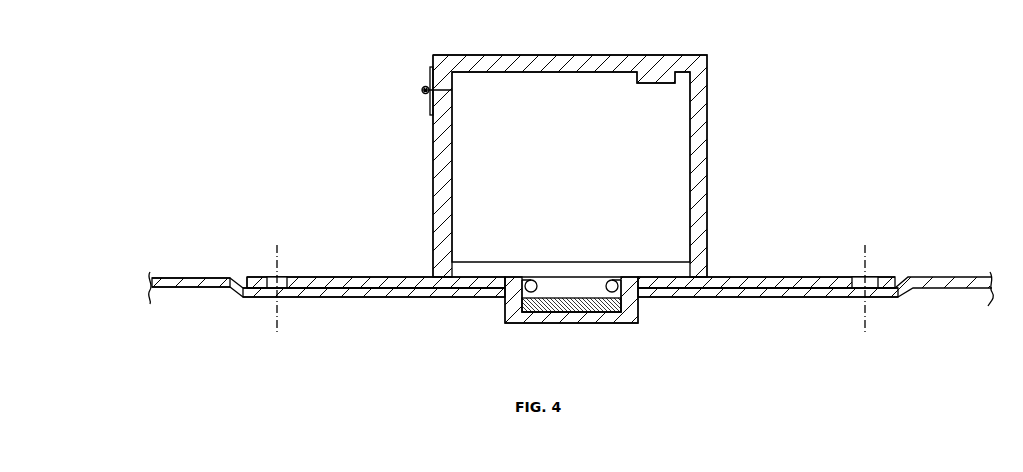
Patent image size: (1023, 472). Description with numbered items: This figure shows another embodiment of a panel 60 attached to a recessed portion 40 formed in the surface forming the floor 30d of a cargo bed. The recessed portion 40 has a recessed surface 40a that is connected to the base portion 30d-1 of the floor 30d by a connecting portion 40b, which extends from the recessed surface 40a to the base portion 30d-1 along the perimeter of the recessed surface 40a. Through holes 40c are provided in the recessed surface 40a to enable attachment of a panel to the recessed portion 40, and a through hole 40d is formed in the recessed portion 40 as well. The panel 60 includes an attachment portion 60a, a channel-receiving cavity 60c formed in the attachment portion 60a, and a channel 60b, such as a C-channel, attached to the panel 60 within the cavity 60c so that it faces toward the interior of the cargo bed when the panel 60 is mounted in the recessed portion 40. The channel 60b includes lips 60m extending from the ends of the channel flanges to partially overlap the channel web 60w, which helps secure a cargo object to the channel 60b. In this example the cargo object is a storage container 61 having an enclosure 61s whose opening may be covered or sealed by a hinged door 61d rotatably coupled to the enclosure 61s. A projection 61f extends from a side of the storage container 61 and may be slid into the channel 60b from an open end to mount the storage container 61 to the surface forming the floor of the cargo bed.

The floor 30d is at (175, 272).
The base portion 30d-1 is at (220, 277).
The recessed portion 40 is at (672, 300).
The recessed surface 40a is at (752, 298).
The connecting portion 40b is at (237, 297).
The through holes 40c is at (270, 298).
The through hole 40d is at (500, 298).
The panel 60 is at (413, 272).
The attachment portion 60a is at (310, 277).
The channel 60b is at (615, 282).
The channel-receiving cavity 60c is at (532, 320).
The lips 60m is at (525, 298).
The channel web 60w is at (593, 318).
The storage container 61 is at (712, 51).
The hinged door 61d is at (470, 63).
The enclosure 61s is at (712, 115).
The projection 61f is at (568, 314).